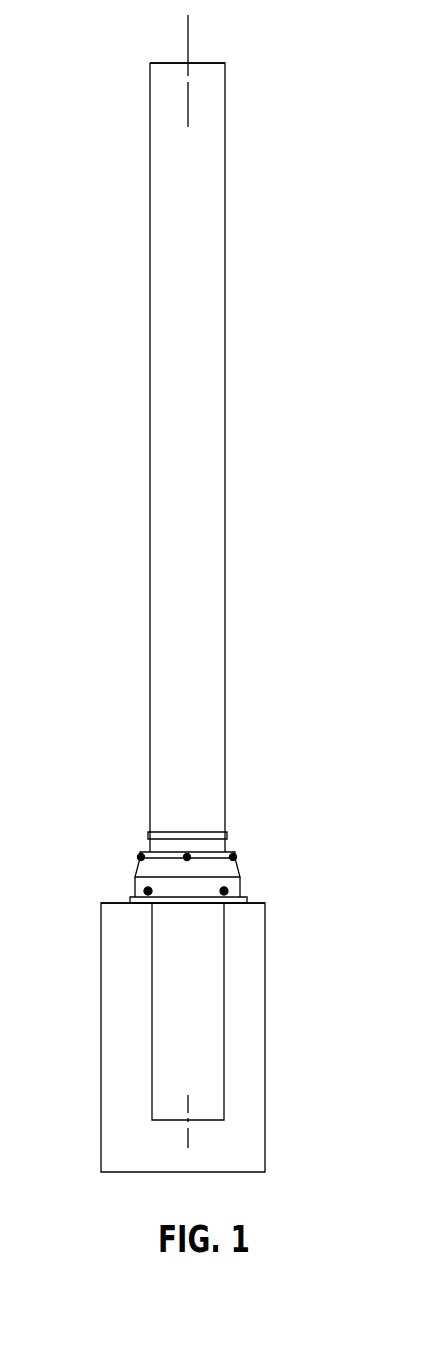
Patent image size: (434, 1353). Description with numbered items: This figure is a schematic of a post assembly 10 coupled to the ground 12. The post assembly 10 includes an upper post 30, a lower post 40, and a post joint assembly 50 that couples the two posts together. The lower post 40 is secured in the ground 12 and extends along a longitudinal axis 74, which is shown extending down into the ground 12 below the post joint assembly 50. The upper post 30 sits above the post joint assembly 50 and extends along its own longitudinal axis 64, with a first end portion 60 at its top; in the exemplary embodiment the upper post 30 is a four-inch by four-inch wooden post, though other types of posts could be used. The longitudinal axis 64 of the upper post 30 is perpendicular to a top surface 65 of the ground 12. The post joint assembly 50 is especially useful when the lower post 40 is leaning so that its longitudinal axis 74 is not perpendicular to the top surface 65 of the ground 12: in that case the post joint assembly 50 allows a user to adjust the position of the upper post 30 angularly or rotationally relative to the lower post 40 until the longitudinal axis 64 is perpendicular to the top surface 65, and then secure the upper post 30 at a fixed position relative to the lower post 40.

The post assembly 10 is at (275, 222).
The ground 12 is at (258, 903).
The upper post 30 is at (225, 542).
The lower post 40 is at (224, 1063).
The post joint assembly 50 is at (237, 866).
The first end portion 60 is at (226, 138).
The longitudinal axis 64 is at (188, 48).
The top surface 65 is at (118, 903).
The longitudinal axis 74 is at (188, 1140).